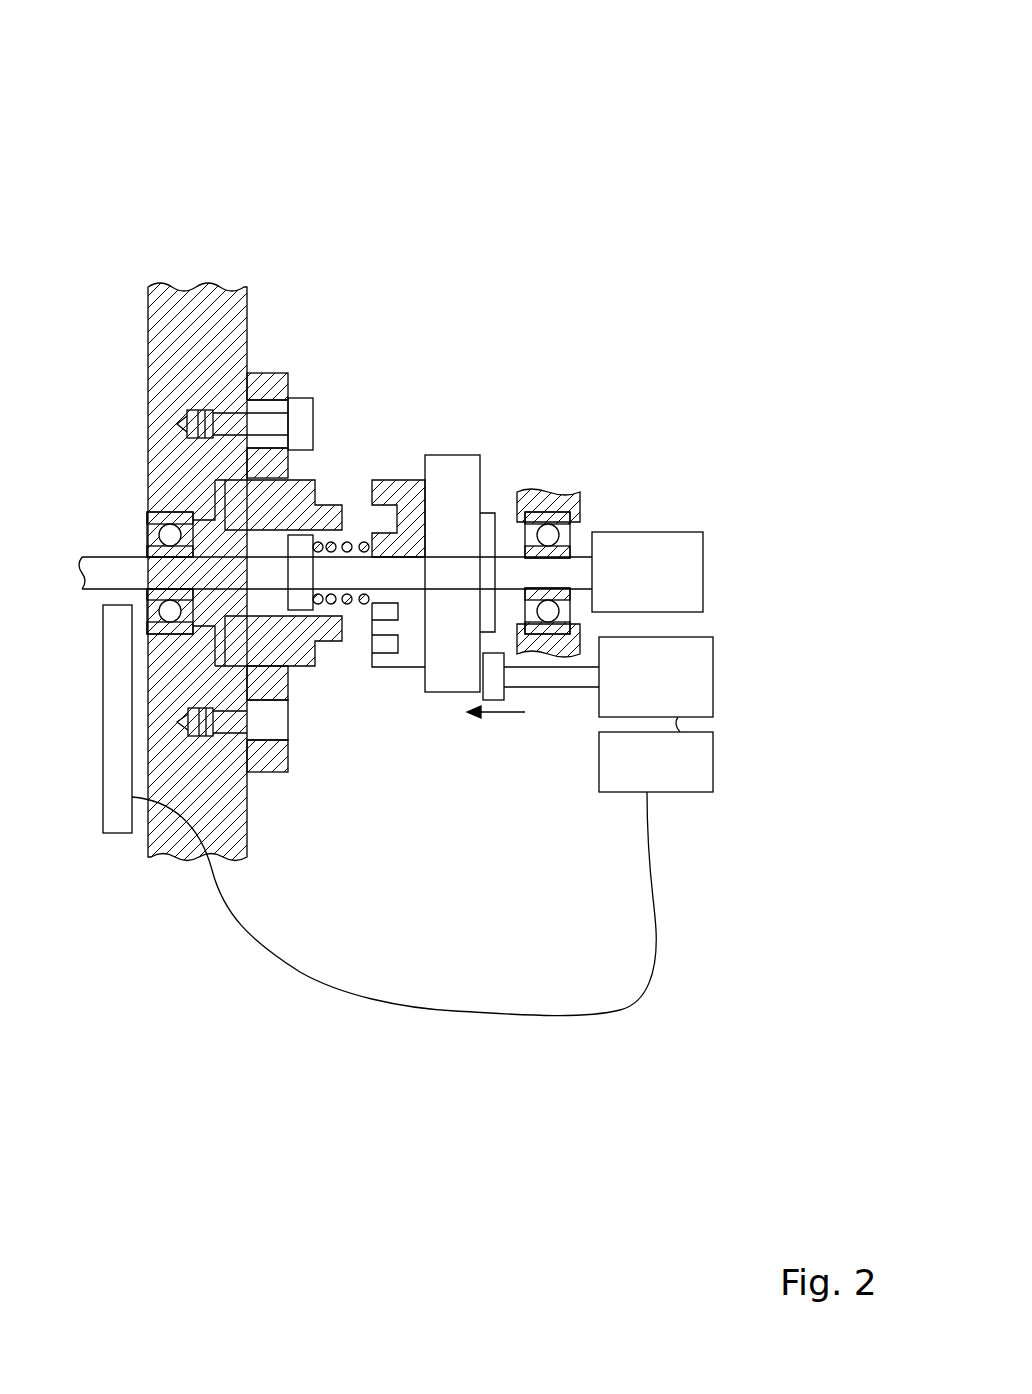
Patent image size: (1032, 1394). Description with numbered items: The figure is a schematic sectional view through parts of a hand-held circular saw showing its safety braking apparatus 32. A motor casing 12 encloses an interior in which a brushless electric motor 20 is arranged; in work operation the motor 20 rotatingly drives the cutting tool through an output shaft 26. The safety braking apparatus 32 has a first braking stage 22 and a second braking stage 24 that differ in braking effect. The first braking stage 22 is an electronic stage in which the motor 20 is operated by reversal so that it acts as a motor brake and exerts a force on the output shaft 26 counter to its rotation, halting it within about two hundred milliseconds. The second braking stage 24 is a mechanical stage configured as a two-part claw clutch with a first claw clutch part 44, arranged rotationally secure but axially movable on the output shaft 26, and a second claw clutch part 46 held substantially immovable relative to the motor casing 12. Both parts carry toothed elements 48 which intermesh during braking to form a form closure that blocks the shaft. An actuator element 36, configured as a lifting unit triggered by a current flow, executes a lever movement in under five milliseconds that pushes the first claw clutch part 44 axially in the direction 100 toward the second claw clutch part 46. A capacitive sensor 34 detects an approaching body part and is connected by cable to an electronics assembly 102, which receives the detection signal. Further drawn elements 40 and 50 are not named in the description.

The motor casing 12 is at (200, 303).
The brushless electric motor 20 is at (705, 538).
The first braking stage 22 is at (693, 547).
The second braking stage 24 is at (387, 856).
The output shaft 26 is at (98, 557).
The safety braking apparatus 32 is at (558, 136).
The sensor 34 is at (115, 820).
The actuator element 36 is at (680, 678).
The disc 40 is at (472, 495).
The first claw clutch part 44 is at (428, 719).
The second claw clutch part 46 is at (309, 732).
The toothed element 48 is at (333, 518).
The teeth 50 is at (387, 643).
The direction 100 is at (503, 722).
The electronics assembly 102 is at (678, 772).